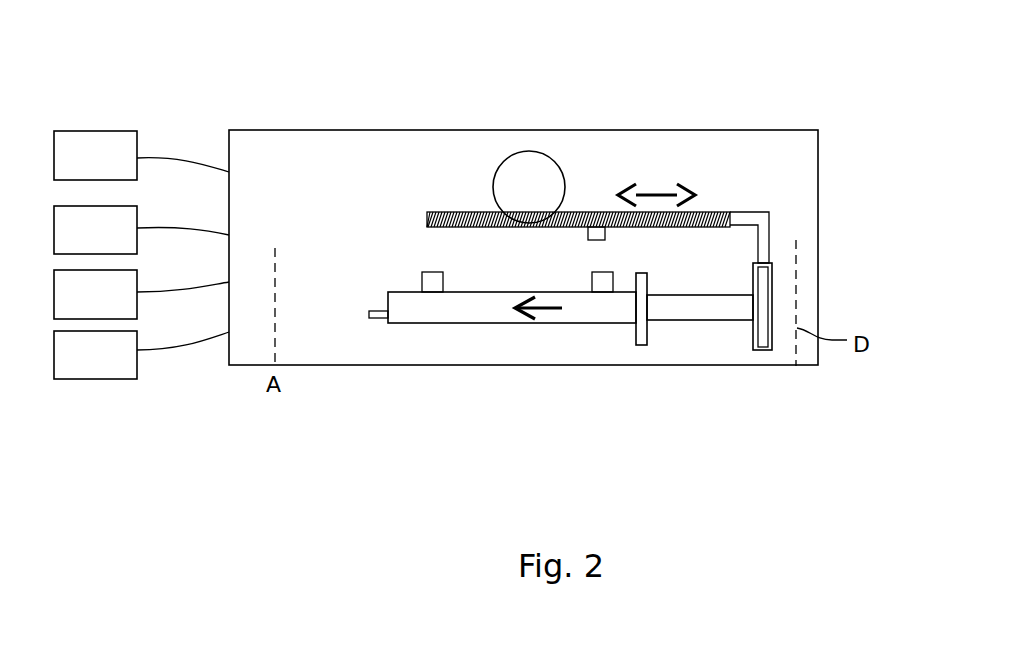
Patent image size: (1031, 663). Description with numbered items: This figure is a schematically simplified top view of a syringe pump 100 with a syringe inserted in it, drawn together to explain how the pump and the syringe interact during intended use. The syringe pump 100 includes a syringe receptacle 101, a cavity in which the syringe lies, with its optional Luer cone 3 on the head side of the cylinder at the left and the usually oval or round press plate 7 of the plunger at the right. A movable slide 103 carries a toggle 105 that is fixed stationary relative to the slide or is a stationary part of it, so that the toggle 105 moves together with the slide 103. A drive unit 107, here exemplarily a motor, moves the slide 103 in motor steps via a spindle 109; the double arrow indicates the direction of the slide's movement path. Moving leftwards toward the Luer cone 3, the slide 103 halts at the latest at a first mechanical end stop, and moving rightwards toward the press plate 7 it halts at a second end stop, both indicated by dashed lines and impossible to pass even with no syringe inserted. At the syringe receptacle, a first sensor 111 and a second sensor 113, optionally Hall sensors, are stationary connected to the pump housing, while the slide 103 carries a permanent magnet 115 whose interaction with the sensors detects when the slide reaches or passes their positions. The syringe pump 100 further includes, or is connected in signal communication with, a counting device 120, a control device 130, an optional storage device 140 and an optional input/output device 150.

The syringe pump 100 is at (853, 178).
The syringe receptacle 101 is at (362, 285).
The movable slide 103 is at (757, 197).
The toggle 105 is at (772, 345).
The drive unit 107 is at (537, 172).
The spindle 109 is at (453, 212).
The first sensor 111 is at (601, 283).
The second sensor 113 is at (430, 282).
The permanent magnet 115 is at (598, 234).
The counting device 120 is at (141, 155).
The control device 130 is at (141, 230).
The storage device 140 is at (141, 294).
The input/output device 150 is at (141, 355).
The Luer cone 3 is at (369, 314).
The press plate 7 is at (767, 280).